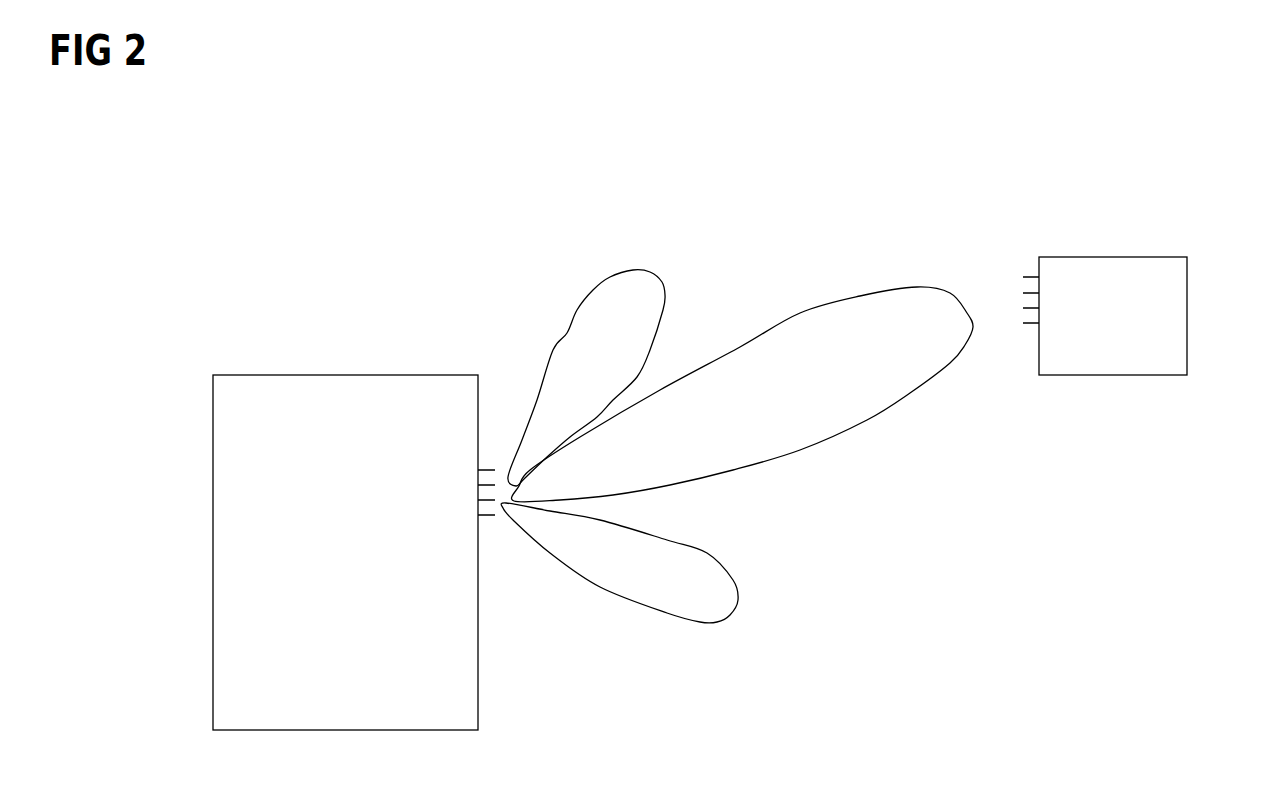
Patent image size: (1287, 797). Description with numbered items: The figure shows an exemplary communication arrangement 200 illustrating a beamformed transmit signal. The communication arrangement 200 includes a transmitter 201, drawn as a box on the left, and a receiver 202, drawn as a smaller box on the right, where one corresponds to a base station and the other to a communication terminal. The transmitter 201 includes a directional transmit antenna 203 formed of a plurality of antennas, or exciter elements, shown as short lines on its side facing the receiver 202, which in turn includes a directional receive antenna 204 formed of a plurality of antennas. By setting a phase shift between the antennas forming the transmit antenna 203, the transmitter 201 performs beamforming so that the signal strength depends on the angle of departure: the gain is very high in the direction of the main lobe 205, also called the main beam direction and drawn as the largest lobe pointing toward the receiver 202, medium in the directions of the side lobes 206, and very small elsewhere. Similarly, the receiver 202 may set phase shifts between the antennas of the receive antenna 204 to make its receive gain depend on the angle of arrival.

The communication arrangement 200 is at (1163, 117).
The transmitter 201 is at (303, 375).
The receiver 202 is at (1130, 257).
The directional transmit antenna 203 is at (487, 460).
The directional receive antenna 204 is at (1030, 327).
The main lobe 205 is at (805, 311).
The side lobes 206 is at (640, 270).